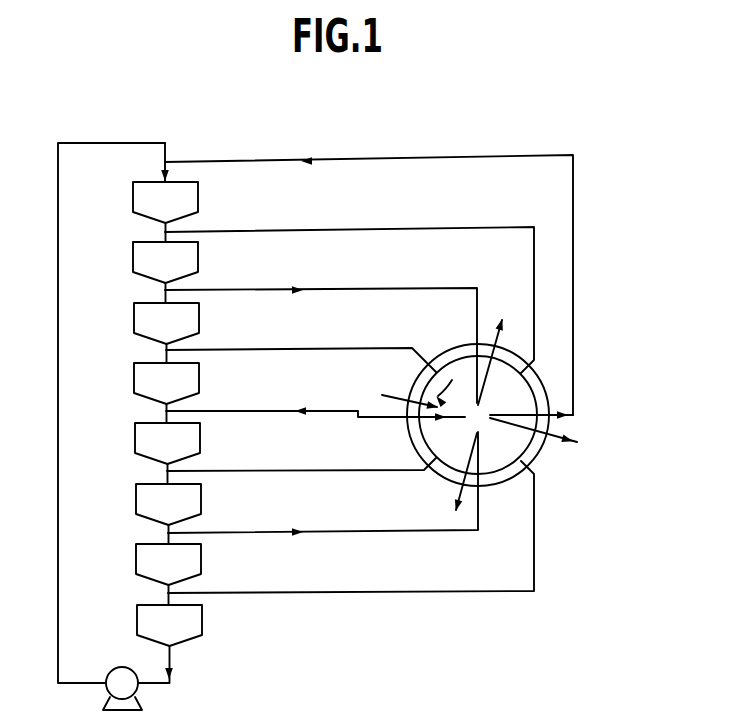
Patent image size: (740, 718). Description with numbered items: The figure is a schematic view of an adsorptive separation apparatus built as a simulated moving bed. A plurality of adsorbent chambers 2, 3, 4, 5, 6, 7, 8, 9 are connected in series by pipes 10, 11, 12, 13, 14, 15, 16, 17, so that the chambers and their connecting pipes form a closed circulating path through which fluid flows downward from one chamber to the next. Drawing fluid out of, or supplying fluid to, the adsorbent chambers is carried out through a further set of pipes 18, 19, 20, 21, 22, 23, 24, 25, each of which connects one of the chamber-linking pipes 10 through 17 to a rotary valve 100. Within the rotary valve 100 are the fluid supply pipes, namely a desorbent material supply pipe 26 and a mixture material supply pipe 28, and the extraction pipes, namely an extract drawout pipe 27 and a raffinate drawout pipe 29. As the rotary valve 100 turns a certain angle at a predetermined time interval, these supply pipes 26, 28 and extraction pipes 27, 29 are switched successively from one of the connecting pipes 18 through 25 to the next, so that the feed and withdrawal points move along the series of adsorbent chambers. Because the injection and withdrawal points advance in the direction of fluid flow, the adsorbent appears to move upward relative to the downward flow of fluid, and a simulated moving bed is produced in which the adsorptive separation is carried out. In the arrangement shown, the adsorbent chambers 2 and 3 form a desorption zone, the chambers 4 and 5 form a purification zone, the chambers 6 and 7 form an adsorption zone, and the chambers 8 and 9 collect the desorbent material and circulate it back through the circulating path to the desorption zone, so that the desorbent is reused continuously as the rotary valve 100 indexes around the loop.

The adsorbent chamber 2 is at (155, 210).
The adsorbent chamber 3 is at (155, 270).
The adsorbent chamber 4 is at (156, 331).
The adsorbent chamber 5 is at (156, 391).
The adsorbent chamber 6 is at (157, 451).
The adsorbent chamber 7 is at (158, 512).
The adsorbent chamber 8 is at (158, 572).
The adsorbent chamber 9 is at (159, 633).
The pipe 10 is at (160, 222).
The pipe 11 is at (160, 283).
The pipe 12 is at (161, 344).
The pipe 13 is at (161, 404).
The pipe 14 is at (162, 464).
The pipe 15 is at (163, 525).
The pipe 16 is at (163, 585).
The pipe 17 is at (173, 660).
The pipe 18 is at (258, 161).
The pipe 19 is at (258, 231).
The pipe 20 is at (258, 289).
The pipe 21 is at (258, 349).
The pipe 22 is at (258, 410).
The pipe 23 is at (258, 470).
The pipe 24 is at (258, 532).
The pipe 25 is at (258, 592).
The desorbent material supply pipe 26 is at (578, 442).
The extract drawout pipe 27 is at (500, 336).
The mixture material supply pipe 28 is at (393, 396).
The raffinate drawout pipe 29 is at (455, 493).
The rotary valve 100 is at (545, 464).